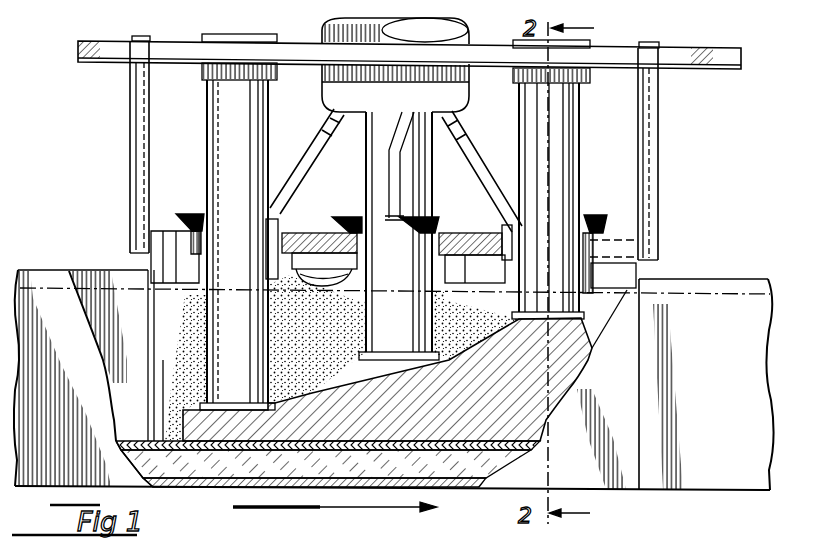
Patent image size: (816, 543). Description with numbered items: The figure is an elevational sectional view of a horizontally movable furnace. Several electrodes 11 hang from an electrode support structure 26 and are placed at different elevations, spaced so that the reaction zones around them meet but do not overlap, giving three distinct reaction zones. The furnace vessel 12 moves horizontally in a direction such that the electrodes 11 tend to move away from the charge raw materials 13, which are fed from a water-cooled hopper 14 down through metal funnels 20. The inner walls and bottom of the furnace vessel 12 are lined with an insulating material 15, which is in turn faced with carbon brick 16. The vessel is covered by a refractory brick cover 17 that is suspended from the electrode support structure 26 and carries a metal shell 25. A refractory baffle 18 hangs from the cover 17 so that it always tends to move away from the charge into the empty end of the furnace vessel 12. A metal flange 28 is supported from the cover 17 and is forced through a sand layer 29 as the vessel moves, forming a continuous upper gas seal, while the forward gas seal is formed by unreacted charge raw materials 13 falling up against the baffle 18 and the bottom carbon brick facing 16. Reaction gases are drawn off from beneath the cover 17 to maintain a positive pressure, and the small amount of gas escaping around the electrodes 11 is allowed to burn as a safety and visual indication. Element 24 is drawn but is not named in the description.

The electrodes 11 is at (215, 108).
The furnace vessel 12 is at (607, 489).
The charge raw materials 13 is at (275, 355).
The water-cooled hopper 14 is at (322, 88).
The insulating material 15 is at (230, 478).
The carbon brick 16 is at (133, 440).
The refractory brick cover 17 is at (445, 262).
The refractory baffle 18 is at (148, 316).
The metal funnels 20 is at (195, 215).
The mold block 24 is at (439, 437).
The metal shell 25 is at (475, 233).
The electrode support structure 26 is at (100, 63).
The metal flange 28 is at (322, 262).
The sand layer 29 is at (315, 290).